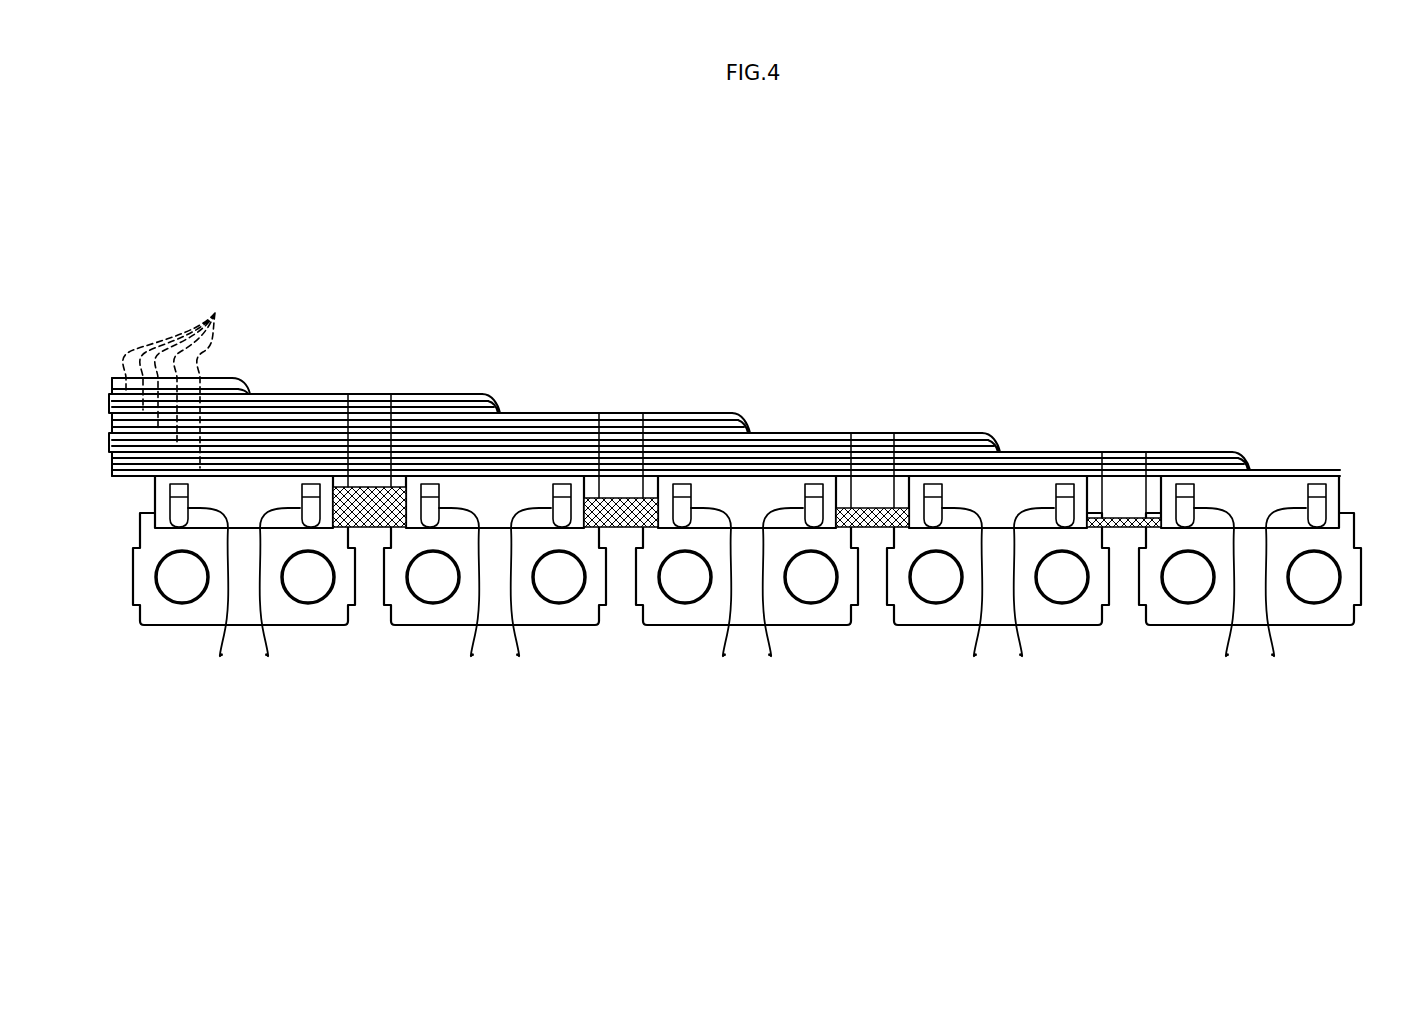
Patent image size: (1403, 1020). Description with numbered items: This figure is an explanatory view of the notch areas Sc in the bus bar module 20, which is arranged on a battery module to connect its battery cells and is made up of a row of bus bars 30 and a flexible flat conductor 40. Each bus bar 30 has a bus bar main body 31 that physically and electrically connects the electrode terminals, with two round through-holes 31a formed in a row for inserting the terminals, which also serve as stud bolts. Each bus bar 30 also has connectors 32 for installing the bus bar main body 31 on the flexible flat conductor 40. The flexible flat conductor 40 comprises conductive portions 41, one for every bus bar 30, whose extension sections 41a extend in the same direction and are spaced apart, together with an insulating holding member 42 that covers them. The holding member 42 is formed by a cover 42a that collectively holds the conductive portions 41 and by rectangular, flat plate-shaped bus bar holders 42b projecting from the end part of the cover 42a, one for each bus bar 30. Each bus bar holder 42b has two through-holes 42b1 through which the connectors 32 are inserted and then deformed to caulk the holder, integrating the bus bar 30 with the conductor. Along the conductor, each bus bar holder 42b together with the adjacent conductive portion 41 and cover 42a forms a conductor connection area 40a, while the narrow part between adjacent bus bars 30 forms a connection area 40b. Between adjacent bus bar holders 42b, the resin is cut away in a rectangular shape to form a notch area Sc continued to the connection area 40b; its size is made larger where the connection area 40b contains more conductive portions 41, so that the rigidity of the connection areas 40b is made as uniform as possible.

The bus bar module 20 is at (549, 160).
The bus bar 30 is at (747, 634).
The bus bar main body 31 is at (747, 611).
The through-hole 31a is at (748, 617).
The connector 32 is at (747, 590).
The flexible flat conductor 40 is at (697, 306).
The conductor connection area 40a is at (747, 804).
The connection area 40b is at (747, 804).
The conductive portion 41 is at (179, 362).
The extension section 41a is at (178, 362).
The holding member 42 is at (752, 404).
The cover 42a is at (428, 415).
The bus bar holder 42b is at (243, 500).
The through-hole 42b1 is at (418, 510).
The notch area Sc is at (729, 619).